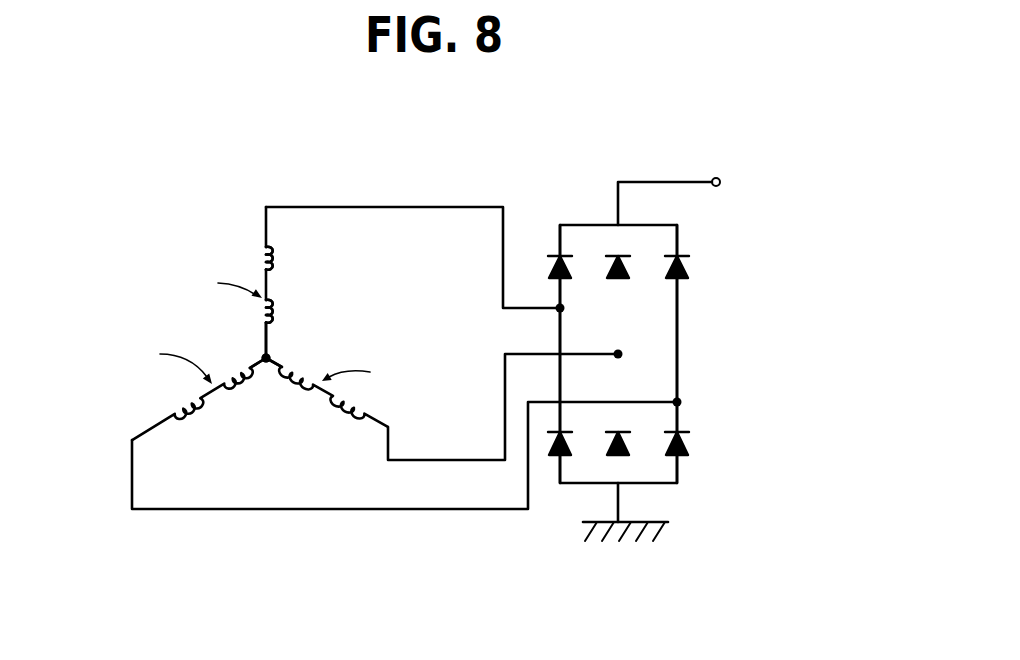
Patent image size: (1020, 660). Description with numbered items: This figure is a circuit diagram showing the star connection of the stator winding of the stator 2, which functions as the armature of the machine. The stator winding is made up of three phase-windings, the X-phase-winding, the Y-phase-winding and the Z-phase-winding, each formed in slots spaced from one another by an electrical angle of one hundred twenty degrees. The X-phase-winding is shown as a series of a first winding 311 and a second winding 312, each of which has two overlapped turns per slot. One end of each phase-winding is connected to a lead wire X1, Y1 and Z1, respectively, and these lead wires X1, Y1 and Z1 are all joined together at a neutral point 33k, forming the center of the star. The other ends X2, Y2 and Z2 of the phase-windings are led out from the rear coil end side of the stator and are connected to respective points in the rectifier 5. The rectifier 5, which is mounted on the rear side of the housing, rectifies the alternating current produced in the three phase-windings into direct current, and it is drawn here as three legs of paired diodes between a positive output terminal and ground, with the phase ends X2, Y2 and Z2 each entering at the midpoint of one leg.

The stator 2 is at (376, 200).
The first winding 311 is at (276, 253).
The second winding 312 is at (276, 307).
The neutral point 33k is at (264, 356).
The lead wire X1 is at (268, 339).
The lead wire Y1 is at (253, 372).
The lead wire Z1 is at (273, 372).
The other end of the X-phase-winding X2 is at (558, 306).
The other end of the Y-phase-winding Y2 is at (680, 402).
The other end of the Z-phase-winding Z2 is at (622, 354).
The rectifier 5 is at (684, 274).